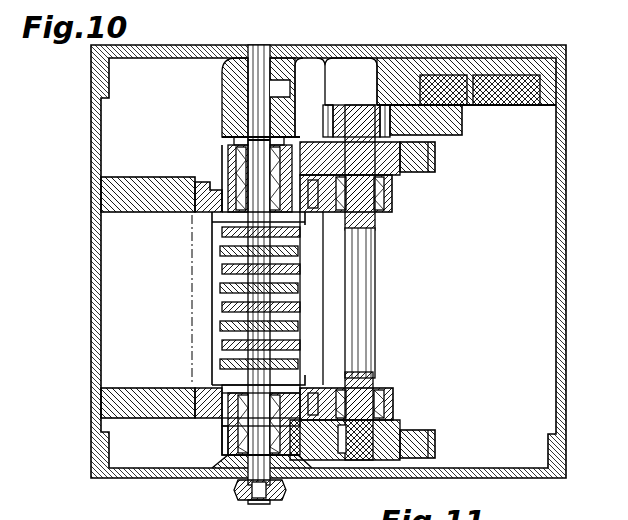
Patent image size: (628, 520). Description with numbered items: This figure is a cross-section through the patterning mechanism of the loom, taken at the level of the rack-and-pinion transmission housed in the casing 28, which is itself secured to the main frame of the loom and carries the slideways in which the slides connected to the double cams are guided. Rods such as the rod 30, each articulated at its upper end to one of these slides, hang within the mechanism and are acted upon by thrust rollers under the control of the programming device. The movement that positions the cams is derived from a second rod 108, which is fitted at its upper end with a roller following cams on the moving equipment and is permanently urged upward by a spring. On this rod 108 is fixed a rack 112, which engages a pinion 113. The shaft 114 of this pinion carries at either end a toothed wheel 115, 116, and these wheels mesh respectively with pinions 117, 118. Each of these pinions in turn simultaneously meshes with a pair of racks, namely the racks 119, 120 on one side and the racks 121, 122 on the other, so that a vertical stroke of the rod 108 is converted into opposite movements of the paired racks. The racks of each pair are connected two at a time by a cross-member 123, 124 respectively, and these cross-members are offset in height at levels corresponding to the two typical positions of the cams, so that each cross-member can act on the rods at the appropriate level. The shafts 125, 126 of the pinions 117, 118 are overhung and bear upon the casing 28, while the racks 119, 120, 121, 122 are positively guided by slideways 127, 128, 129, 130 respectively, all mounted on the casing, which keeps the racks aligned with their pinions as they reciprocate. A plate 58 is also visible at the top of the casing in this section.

The casing 28 is at (560, 322).
The rod 30 is at (300, 290).
The cover plate 58 is at (515, 101).
The second rod 108 is at (458, 104).
The rack 112 is at (462, 128).
The pinion 113 is at (348, 110).
The shaft 114 is at (375, 283).
The toothed wheel 115 is at (436, 158).
The toothed wheel 116 is at (446, 442).
The pinion 117 is at (232, 148).
The pinion 118 is at (222, 448).
The rack 119 is at (222, 172).
The rack 120 is at (228, 424).
The rack 121 is at (300, 230).
The rack 122 is at (300, 392).
The cross-member 123 is at (192, 306).
The cross-member 124 is at (318, 331).
The shaft 125 is at (258, 52).
The shaft 126 is at (240, 482).
The slideway 127 is at (155, 212).
The slideway 128 is at (145, 395).
The slideway 129 is at (394, 200).
The slideway 130 is at (394, 405).